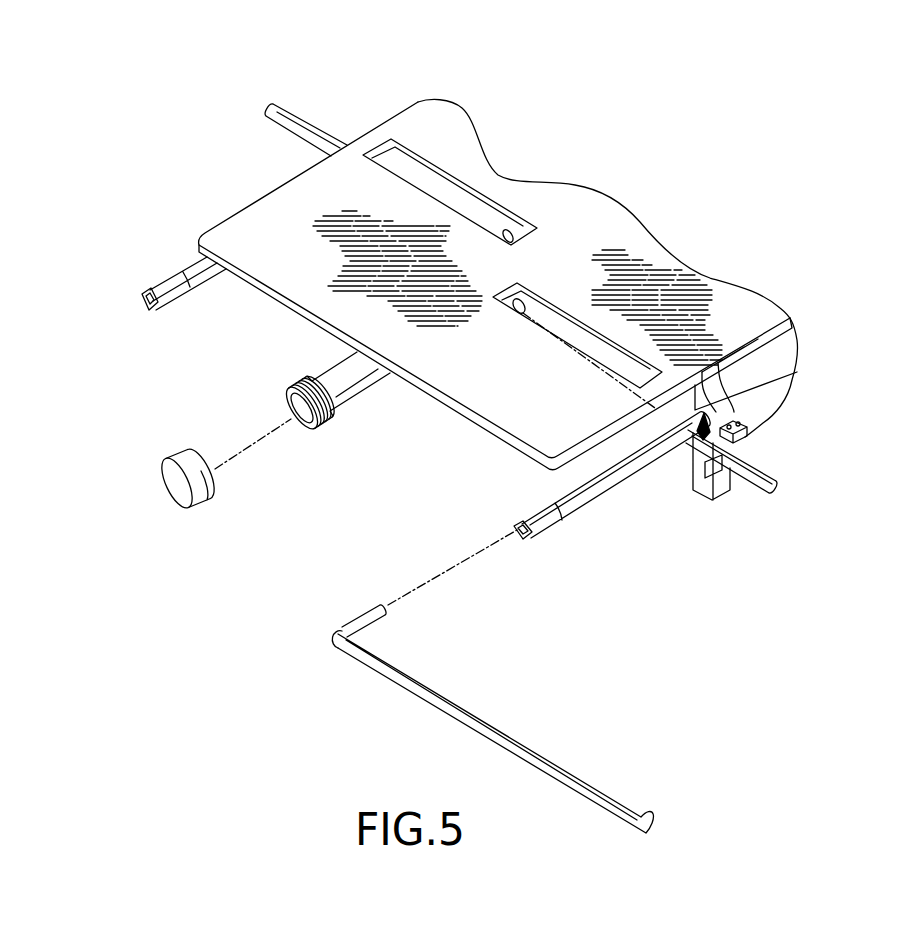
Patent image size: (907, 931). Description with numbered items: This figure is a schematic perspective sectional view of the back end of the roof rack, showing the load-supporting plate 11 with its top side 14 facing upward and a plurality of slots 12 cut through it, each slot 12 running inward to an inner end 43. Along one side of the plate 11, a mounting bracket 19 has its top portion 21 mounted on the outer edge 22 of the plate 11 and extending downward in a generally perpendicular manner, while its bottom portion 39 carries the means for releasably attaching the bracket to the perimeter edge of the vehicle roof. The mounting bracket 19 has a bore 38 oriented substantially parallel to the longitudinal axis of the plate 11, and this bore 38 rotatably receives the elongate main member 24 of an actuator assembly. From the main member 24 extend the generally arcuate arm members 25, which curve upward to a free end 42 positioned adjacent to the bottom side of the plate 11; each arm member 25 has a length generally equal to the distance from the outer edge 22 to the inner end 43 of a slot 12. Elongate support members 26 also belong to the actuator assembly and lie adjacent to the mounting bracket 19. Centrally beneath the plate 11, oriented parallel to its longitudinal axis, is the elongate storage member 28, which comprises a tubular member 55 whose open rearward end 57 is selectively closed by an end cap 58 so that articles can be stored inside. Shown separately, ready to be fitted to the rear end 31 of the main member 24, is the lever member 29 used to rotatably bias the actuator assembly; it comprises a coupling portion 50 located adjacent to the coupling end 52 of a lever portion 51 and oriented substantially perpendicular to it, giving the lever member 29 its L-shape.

The plate 11 is at (199, 238).
The slots 12 is at (431, 180).
The top side 14 is at (293, 210).
The mounting brackets 19 is at (757, 433).
The top portion 21 is at (717, 382).
The outer edge 22 is at (752, 348).
The main member 24 is at (197, 272).
The arm members 25 is at (590, 375).
The support members 26 is at (303, 130).
The storage member 28 is at (343, 390).
The lever member 29 is at (332, 633).
The rear end 31 is at (143, 293).
The bore 38 is at (695, 448).
The bottom portion 39 is at (728, 472).
The free end 42 is at (500, 232).
The inner end 43 is at (533, 228).
The coupling portion 50 is at (438, 676).
The lever portion 51 is at (447, 713).
The coupling end 52 is at (340, 640).
The tubular member 55 is at (330, 362).
The rearward end 57 is at (297, 410).
The end cap 58 is at (177, 483).